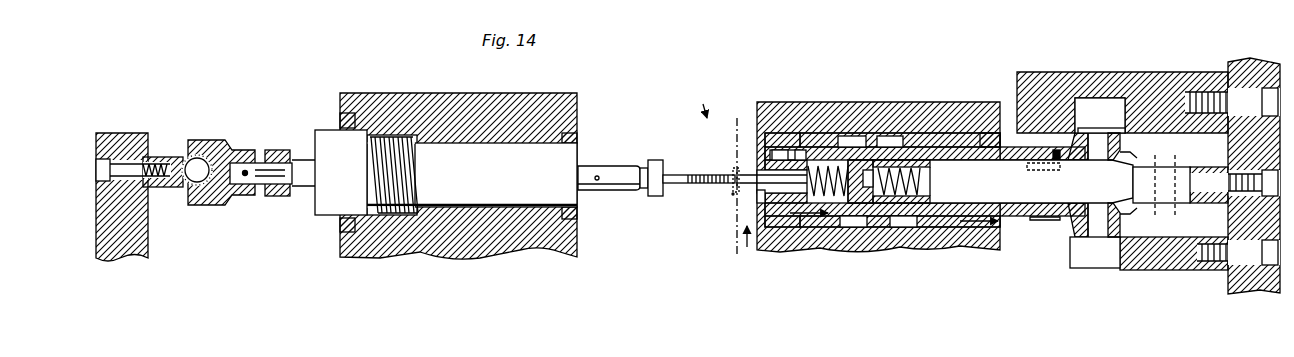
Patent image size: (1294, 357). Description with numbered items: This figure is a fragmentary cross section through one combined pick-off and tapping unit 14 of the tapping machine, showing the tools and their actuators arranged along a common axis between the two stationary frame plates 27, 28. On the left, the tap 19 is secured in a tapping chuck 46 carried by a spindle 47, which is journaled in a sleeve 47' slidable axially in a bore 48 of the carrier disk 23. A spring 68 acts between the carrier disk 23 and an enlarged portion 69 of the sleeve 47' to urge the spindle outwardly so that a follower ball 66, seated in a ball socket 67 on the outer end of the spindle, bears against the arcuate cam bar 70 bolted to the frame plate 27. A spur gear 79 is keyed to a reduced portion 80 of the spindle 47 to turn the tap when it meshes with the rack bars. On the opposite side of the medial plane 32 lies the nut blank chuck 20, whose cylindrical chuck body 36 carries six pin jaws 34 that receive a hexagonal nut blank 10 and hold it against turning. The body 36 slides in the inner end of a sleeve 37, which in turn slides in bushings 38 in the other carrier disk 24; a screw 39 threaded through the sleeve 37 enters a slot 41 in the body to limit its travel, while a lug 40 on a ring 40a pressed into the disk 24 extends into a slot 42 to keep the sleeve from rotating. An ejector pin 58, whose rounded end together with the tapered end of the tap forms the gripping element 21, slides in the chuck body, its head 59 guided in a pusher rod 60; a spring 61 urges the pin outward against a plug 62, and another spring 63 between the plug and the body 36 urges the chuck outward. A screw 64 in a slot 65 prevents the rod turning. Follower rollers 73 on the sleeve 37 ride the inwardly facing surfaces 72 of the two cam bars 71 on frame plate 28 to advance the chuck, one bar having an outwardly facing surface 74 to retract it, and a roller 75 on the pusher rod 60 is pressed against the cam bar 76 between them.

The nut blank 10 is at (733, 195).
The combined pick-off and tapping unit 14 is at (702, 102).
The tap 19 is at (697, 174).
The chuck 20 is at (749, 249).
The gripping element 21 is at (735, 186).
The carrier disk 23 is at (483, 95).
The carrier disk 24 is at (757, 103).
The frame plate 27 is at (150, 243).
The frame plate 28 is at (1240, 285).
The medial plane 32 is at (735, 232).
The jaw 34 is at (760, 197).
The chuck body 36 is at (767, 169).
The sleeve 37 is at (768, 154).
The bushing 38 is at (765, 136).
The screw 39 is at (801, 152).
The lug 40 is at (1016, 218).
The ring 40a is at (1002, 136).
The slot 41 is at (778, 152).
The slot 42 is at (1045, 221).
The tapping chuck 46 is at (650, 159).
The spindle 47 is at (609, 165).
The sleeve 47' is at (609, 201).
The bore 48 is at (513, 145).
The ejector pin 58 is at (734, 170).
The head 59 is at (890, 140).
The pusher rod 60 is at (903, 220).
The spring 61 is at (932, 182).
The plug 62 is at (853, 220).
The spring 63 is at (852, 140).
The screw 64 is at (1052, 149).
The slot 65 is at (1035, 171).
The follower ball 66 is at (191, 138).
The ball socket 67 is at (216, 205).
The spring 68 is at (413, 171).
The enlarged portion 69 is at (332, 130).
The cam bar 70 is at (178, 188).
The cam bar 71 is at (1172, 74).
The inwardly facing surface 72 is at (1124, 140).
The follower roller 73 is at (1102, 98).
The outwardly facing surface 74 is at (1078, 118).
The follower roller 75 is at (1187, 170).
The cam bar 76 is at (1210, 203).
The gear 79 is at (286, 150).
The reduced portion 80 is at (262, 190).